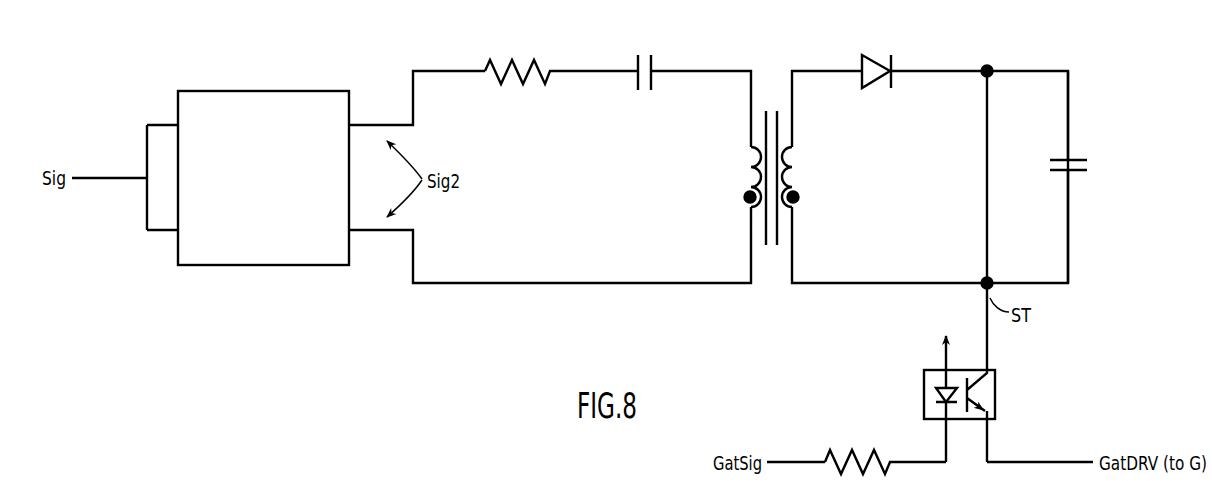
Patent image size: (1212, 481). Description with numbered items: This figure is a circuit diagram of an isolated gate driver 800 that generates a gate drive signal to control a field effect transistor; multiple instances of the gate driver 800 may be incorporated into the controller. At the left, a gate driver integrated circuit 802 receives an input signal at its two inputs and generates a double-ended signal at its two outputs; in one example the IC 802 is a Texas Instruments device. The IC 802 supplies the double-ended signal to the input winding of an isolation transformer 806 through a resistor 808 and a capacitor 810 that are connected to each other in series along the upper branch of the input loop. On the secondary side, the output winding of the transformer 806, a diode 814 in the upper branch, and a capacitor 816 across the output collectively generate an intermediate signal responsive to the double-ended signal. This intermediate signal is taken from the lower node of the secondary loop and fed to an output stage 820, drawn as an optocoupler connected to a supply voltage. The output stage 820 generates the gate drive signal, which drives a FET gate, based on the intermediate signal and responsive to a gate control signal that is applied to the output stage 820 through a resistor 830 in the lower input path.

The isolated gate driver 800 is at (303, 47).
The gate driver integrated circuit 802 is at (273, 265).
The isolation transformer 806 is at (742, 173).
The resistor 808 is at (537, 68).
The capacitor 810 is at (653, 63).
The diode 814 is at (873, 57).
The capacitor 816 is at (1075, 160).
The output stage 820 is at (997, 398).
The resistor 830 is at (832, 452).